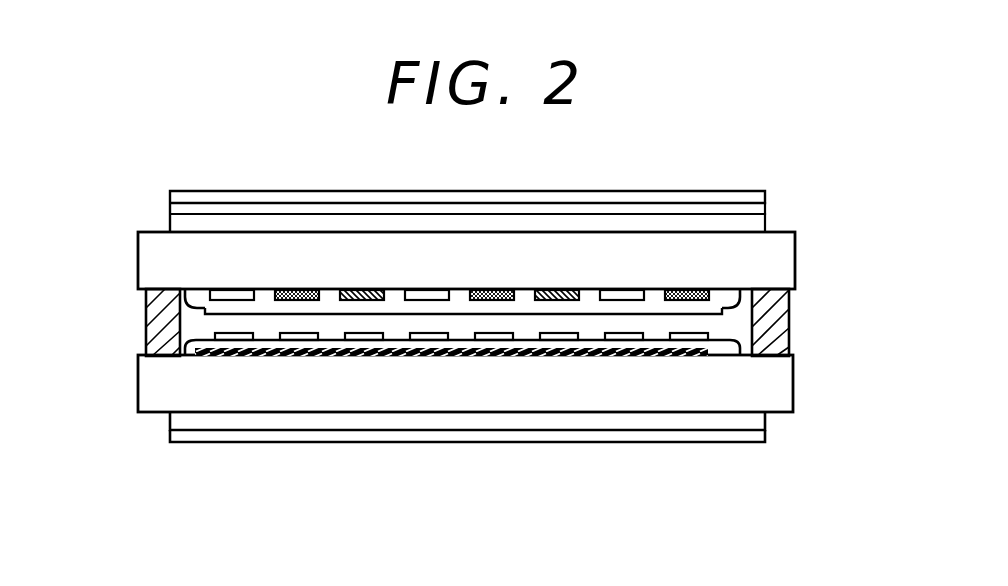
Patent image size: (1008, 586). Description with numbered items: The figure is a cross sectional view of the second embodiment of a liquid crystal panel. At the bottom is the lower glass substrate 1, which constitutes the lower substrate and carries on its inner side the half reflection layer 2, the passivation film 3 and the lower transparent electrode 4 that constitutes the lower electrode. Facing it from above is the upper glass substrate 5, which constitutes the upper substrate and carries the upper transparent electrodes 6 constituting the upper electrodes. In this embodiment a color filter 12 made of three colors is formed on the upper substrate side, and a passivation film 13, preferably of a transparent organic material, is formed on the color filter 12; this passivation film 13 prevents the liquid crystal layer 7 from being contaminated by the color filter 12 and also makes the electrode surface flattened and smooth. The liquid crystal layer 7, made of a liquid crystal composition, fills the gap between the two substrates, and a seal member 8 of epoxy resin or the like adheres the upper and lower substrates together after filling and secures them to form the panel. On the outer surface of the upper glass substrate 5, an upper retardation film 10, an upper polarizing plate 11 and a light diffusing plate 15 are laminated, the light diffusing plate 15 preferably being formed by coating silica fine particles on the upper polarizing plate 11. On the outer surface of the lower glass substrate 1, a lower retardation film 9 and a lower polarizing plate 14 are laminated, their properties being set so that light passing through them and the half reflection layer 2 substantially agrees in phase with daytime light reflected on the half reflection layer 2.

The lower glass substrate 1 is at (775, 380).
The half reflection layer 2 is at (690, 357).
The passivation film 3 is at (733, 348).
The lower transparent electrode 4 is at (557, 340).
The upper glass substrate 5 is at (782, 262).
The upper transparent electrodes 6 is at (588, 311).
The liquid crystal layer 7 is at (193, 323).
The seal member 8 is at (158, 338).
The lower retardation film 9 is at (522, 422).
The upper retardation film 10 is at (755, 226).
The upper polarizing plate 11 is at (765, 208).
The color filter 12 is at (690, 290).
The passivation film 13 is at (740, 297).
The lower polarizing plate 14 is at (612, 438).
The light diffusing plate 15 is at (765, 197).